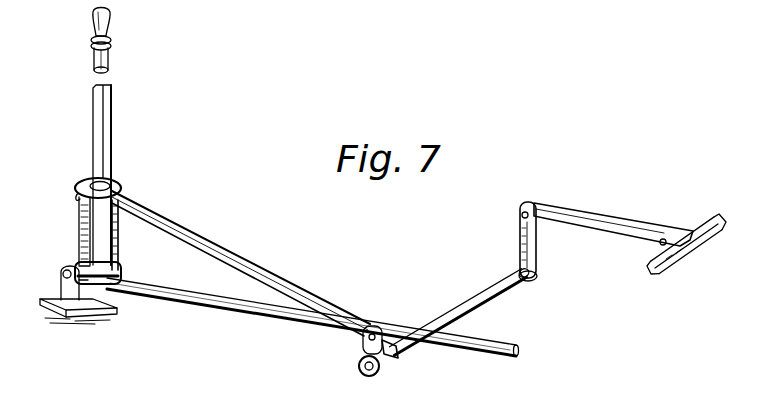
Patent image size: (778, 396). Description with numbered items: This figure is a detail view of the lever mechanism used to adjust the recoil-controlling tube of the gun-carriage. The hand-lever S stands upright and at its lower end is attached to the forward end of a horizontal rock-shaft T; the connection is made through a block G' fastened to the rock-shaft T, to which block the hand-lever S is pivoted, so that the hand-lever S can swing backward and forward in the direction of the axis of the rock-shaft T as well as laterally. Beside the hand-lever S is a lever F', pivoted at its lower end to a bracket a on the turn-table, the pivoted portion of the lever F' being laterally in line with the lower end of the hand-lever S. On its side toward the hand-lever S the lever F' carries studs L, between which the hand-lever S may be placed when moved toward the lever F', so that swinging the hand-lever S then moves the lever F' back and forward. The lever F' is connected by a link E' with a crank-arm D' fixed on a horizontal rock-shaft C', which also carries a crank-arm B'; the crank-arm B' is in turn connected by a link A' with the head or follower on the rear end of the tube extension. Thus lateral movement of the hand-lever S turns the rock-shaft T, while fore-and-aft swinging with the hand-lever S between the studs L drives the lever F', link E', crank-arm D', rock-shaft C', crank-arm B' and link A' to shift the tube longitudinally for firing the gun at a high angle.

The hand-lever S is at (113, 116).
The stud L is at (122, 191).
The lever F' is at (84, 233).
The block G' is at (118, 263).
The bracket a is at (58, 290).
The rock-shaft T is at (313, 317).
The link E' is at (241, 263).
The crank-arm D' is at (363, 351).
The rock-shaft C' is at (460, 311).
The crank-arm B' is at (543, 241).
The link A' is at (630, 228).